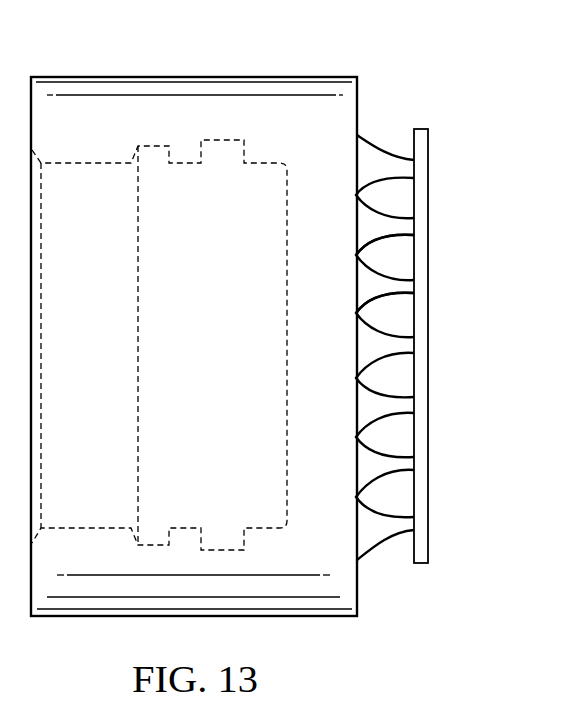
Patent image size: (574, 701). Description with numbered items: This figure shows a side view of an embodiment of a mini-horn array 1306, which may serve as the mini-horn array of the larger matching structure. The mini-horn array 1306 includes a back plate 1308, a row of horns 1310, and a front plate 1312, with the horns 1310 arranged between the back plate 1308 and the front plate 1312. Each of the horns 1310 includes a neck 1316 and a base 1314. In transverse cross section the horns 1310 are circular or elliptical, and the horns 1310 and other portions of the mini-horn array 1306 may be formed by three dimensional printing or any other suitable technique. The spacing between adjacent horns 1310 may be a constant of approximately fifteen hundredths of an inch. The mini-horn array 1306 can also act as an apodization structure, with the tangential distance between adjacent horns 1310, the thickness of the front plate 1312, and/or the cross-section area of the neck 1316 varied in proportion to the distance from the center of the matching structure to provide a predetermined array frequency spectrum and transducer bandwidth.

The mini-horn array 1306 is at (167, 73).
The back plate 1308 is at (283, 189).
The horns 1310 is at (393, 214).
The neck 1316 is at (398, 237).
The base 1314 is at (398, 297).
The front plate 1312 is at (429, 379).